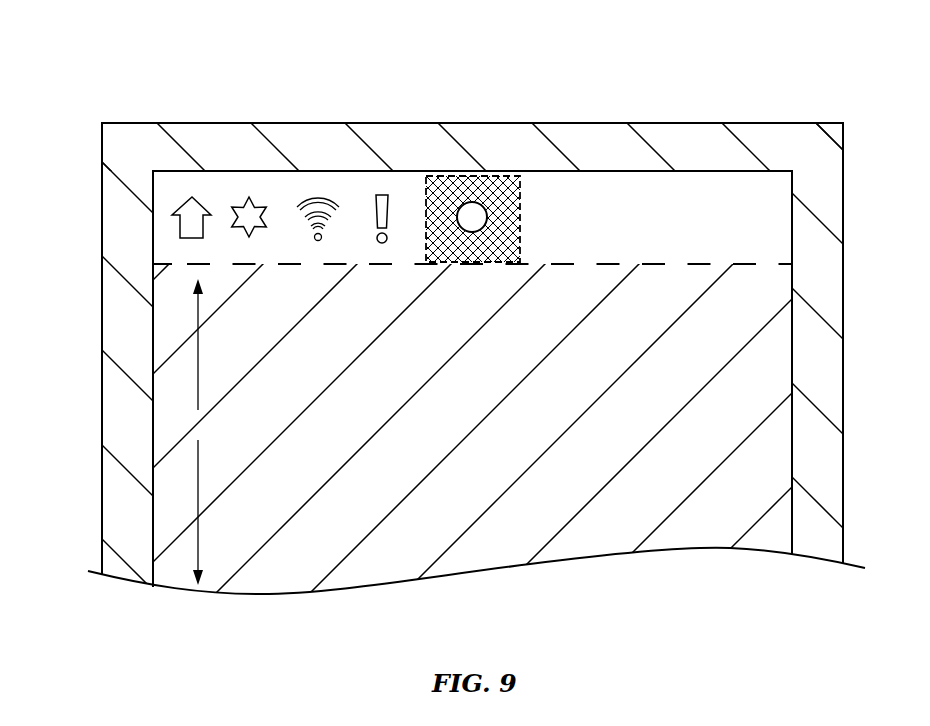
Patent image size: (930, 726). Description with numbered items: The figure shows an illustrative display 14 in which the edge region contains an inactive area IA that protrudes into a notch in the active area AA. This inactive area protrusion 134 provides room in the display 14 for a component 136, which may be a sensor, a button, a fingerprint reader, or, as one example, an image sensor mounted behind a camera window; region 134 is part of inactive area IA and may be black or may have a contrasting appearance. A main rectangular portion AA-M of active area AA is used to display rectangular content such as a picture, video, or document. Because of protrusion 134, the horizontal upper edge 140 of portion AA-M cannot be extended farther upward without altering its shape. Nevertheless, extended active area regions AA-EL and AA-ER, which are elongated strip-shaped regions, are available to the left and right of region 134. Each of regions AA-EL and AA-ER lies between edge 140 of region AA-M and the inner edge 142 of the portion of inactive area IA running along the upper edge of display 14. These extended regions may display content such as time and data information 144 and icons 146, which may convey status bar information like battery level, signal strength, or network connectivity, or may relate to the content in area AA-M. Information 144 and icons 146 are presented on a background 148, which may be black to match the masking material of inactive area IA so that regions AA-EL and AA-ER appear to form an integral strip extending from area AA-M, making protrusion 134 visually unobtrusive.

The display 14 is at (465, 325).
The inactive area protrusion 134 is at (433, 182).
The component 136 is at (477, 200).
The horizontal upper edge 140 is at (182, 253).
The inner edge 142 is at (322, 172).
The time and data information 144 is at (628, 256).
The icons 146 is at (334, 257).
The background 148 is at (363, 200).
The active area AA is at (277, 184).
The inactive area IA is at (687, 130).
The extended active area region AA-EL is at (210, 190).
The extended active area region AA-ER is at (573, 187).
The main portion AA-M is at (186, 432).